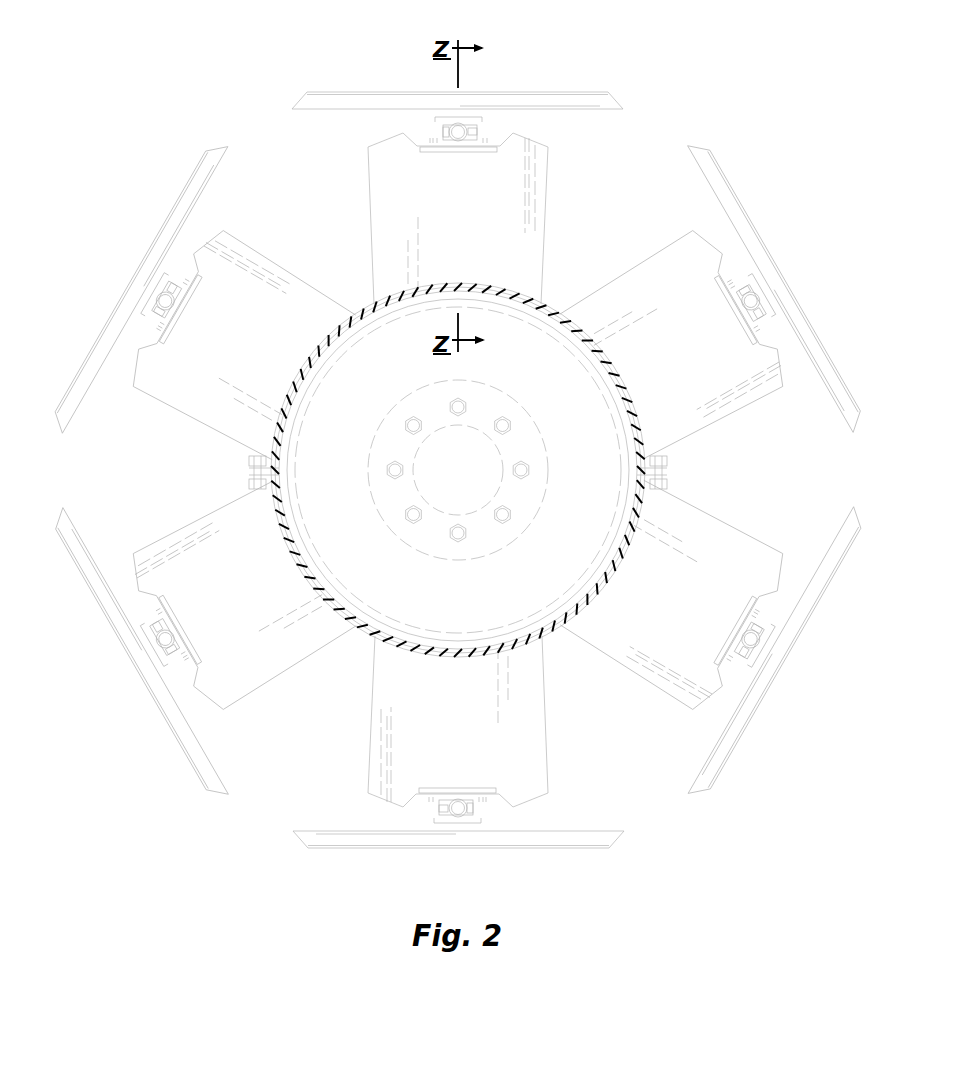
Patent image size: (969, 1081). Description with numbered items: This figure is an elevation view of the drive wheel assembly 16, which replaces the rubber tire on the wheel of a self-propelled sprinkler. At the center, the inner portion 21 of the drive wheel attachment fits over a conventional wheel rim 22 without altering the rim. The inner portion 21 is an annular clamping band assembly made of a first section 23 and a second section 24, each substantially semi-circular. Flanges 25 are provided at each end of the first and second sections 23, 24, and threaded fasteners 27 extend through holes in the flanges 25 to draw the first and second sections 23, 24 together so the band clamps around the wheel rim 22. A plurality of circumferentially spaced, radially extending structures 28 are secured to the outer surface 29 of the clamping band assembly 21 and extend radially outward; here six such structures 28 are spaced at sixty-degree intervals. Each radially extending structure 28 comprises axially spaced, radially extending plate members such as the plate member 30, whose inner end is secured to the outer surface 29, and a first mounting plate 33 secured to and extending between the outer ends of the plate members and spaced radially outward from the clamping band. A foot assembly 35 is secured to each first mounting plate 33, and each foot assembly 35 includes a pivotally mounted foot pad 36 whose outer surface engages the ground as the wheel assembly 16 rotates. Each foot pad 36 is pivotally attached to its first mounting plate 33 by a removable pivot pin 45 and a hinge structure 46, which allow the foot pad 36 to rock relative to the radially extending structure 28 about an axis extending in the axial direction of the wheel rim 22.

The drive wheel assembly 16 is at (241, 114).
The inner portion 21 is at (543, 303).
The wheel rim 22 is at (540, 348).
The first section 23 is at (367, 300).
The second section 24 is at (367, 630).
The flanges 25 is at (247, 468).
The threaded fasteners 27 is at (247, 472).
The radially extending structures 28 is at (380, 192).
The outer surface 29 is at (388, 293).
The first plate member 30 is at (543, 210).
The first mounting plate 33 is at (175, 330).
The foot assembly 35 is at (157, 252).
The foot pad 36 is at (180, 197).
The pivot pin 45 is at (157, 303).
The hinge structure 46 is at (163, 290).